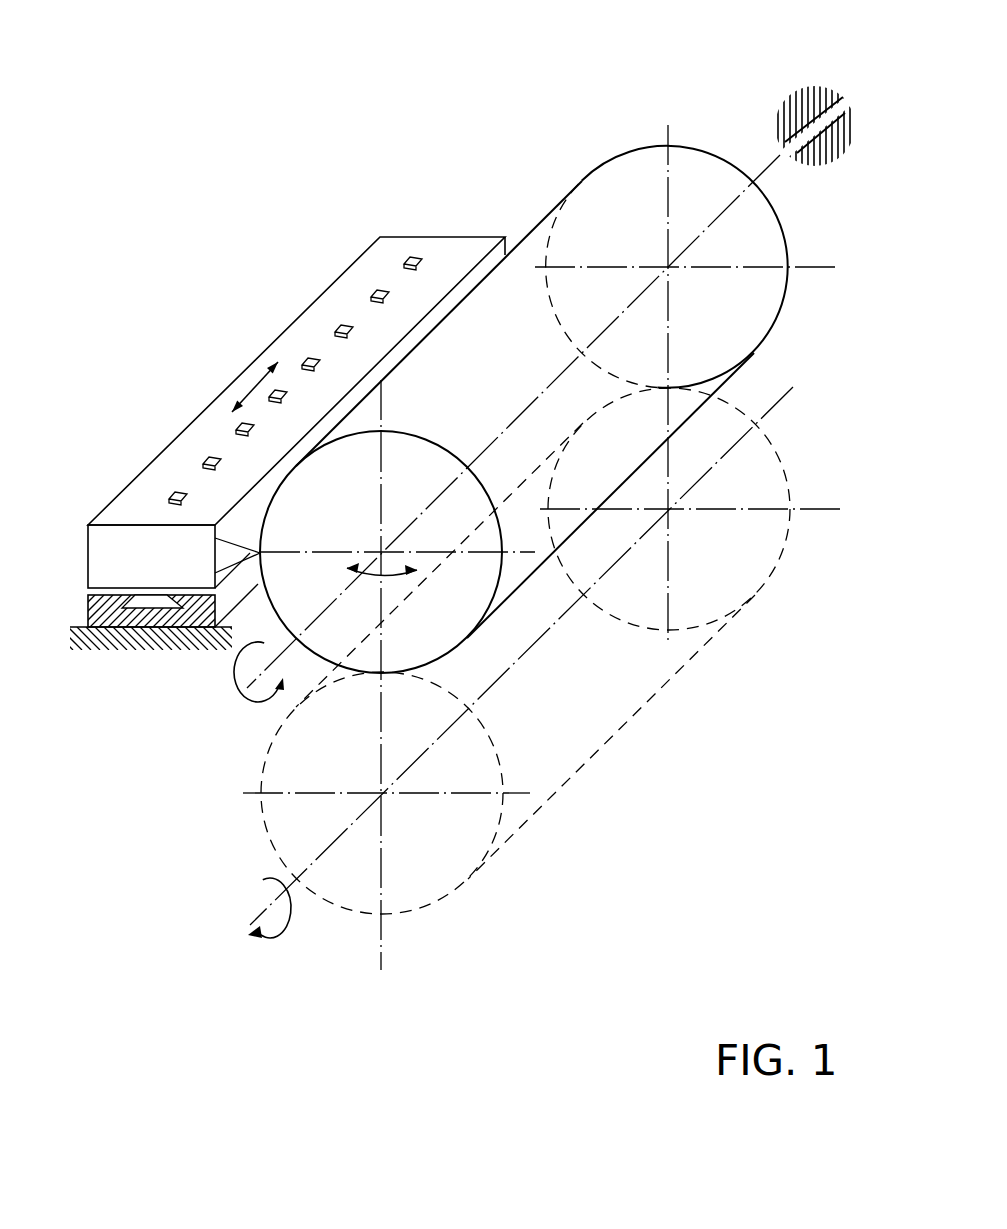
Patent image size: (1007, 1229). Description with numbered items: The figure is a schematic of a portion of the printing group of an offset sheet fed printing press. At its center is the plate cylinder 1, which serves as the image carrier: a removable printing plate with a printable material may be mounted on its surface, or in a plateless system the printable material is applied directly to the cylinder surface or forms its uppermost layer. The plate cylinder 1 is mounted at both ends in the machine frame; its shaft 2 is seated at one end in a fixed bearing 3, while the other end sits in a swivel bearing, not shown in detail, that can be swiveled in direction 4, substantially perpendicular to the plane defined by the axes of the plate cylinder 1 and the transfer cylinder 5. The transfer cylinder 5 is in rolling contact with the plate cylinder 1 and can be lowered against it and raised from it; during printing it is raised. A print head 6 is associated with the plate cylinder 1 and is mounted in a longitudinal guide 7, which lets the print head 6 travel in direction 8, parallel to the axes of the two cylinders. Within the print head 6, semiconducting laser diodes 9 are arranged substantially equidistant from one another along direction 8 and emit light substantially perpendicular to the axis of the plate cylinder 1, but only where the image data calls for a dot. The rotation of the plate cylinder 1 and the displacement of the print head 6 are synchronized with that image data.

The plate cylinder 1 is at (582, 180).
The shaft 2 is at (785, 158).
The fixed bearing 3 is at (823, 137).
The direction 4 is at (398, 578).
The transfer cylinder 5 is at (650, 703).
The print head 6 is at (212, 437).
The longitudinal guide 7 is at (135, 617).
The direction 8 is at (253, 389).
The semiconducting laser diodes 9 is at (341, 325).